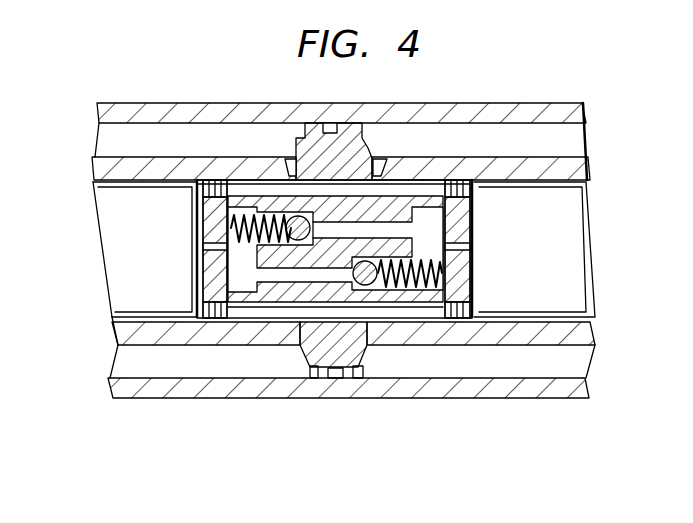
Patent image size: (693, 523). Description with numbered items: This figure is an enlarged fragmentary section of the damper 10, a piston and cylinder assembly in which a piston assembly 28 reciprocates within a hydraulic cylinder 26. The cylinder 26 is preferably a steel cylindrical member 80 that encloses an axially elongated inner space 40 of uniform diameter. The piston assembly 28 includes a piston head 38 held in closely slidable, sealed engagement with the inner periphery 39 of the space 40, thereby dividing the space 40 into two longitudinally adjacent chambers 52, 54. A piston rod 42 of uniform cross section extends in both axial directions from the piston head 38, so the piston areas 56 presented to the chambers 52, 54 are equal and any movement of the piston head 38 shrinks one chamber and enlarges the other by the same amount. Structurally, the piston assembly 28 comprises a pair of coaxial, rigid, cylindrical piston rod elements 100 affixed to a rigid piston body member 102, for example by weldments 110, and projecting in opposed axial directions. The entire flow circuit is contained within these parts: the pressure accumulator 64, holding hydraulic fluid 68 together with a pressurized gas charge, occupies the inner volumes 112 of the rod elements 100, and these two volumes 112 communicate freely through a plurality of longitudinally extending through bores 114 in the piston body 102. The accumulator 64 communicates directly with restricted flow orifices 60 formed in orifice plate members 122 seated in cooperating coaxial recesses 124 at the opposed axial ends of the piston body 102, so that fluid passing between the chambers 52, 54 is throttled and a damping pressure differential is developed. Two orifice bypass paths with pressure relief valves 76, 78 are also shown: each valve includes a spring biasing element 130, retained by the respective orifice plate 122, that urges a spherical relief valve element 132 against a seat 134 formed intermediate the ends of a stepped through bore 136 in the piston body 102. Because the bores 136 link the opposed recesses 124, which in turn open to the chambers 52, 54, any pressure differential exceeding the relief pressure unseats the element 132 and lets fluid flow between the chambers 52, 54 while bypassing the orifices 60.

The damper 10 is at (461, 410).
The hydraulic cylinder 26 is at (110, 114).
The piston assembly 28 is at (348, 140).
The piston head 38 is at (357, 369).
The inner periphery 39 is at (372, 128).
The inner space 40 is at (483, 140).
The piston rod 42 is at (575, 101).
The chamber 52 is at (184, 151).
The chamber 54 is at (536, 151).
The piston areas 56 is at (309, 368).
The restricted flow orifices 60 is at (205, 247).
The pressure accumulator 64 is at (115, 293).
The hydraulic fluid 68 is at (105, 193).
The pressure relief valve 76 is at (445, 280).
The pressure relief valve 78 is at (206, 228).
The cylindrical member 80 is at (452, 113).
The piston rod elements 100 is at (91, 160).
The piston body member 102 is at (322, 368).
The weldments 110 is at (295, 152).
The inner volumes 112 is at (134, 248).
The through bores 114 is at (390, 185).
The orifice plate members 122 is at (207, 279).
The recesses 124 is at (227, 282).
The spring biasing element 130 is at (225, 215).
The spherical relief valve element 132 is at (300, 175).
The seat 134 is at (325, 190).
The stepped through bores 136 is at (417, 183).